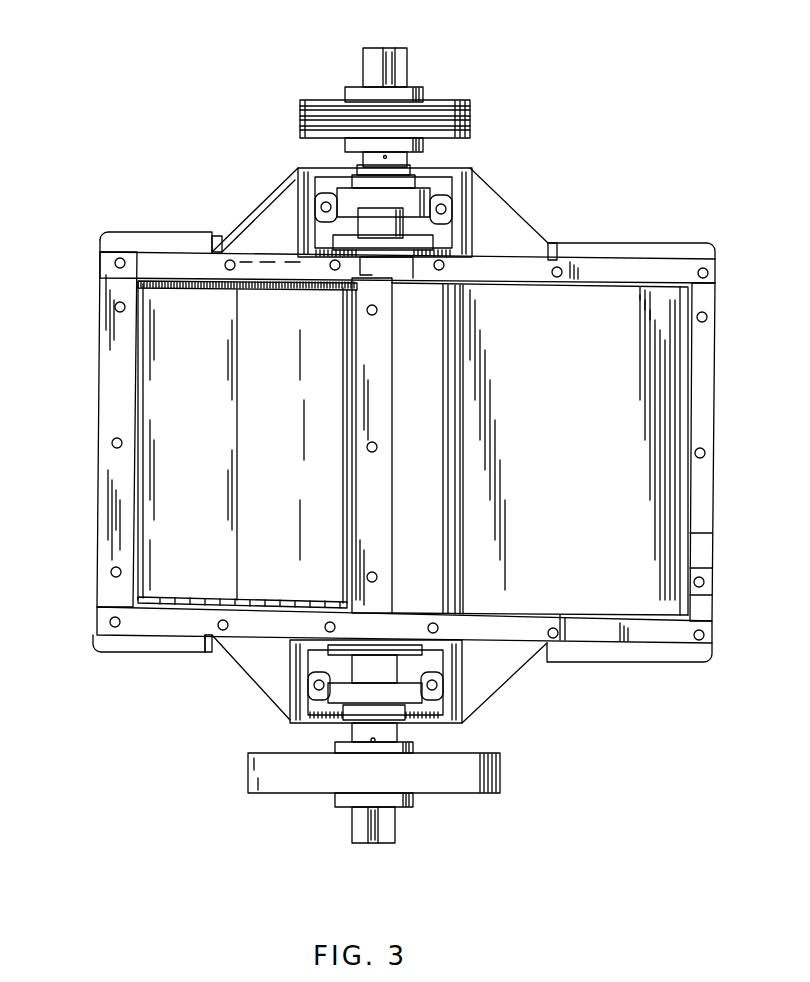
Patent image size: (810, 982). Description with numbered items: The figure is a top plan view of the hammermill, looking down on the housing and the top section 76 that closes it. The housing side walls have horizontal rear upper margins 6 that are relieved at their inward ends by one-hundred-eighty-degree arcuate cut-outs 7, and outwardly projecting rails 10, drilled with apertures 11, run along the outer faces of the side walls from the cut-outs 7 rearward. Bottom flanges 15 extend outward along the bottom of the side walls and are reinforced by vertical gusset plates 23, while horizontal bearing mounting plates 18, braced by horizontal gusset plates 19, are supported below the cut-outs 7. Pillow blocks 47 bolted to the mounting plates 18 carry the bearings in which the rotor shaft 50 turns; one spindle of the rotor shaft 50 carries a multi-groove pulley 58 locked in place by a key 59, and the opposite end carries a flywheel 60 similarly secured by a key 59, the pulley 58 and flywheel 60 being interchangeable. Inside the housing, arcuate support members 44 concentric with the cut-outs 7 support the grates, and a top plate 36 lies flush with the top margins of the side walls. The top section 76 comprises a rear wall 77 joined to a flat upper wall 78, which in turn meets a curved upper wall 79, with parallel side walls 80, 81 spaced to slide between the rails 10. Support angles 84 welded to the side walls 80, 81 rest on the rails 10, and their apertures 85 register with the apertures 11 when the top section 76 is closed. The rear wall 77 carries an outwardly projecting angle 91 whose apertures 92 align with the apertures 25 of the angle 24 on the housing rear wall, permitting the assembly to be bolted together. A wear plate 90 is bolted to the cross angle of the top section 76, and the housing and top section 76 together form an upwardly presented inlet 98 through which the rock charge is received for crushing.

The rear upper margins 6 is at (383, 42).
The arcuate cut-outs 7 is at (48, 440).
The rails 10 is at (716, 278).
The apertures 11 is at (120, 630).
The bottom flanges 15 is at (630, 243).
The bearing mounting plates 18 is at (323, 167).
The gusset plates 19 is at (247, 217).
The vertical gusset plates 23 is at (207, 651).
The angle 24 is at (708, 574).
The apertures 25 is at (704, 582).
The top plate 36 is at (100, 463).
The arcuate support members 44 is at (222, 290).
The pillow blocks 47 is at (440, 179).
The rotor shaft 50 is at (408, 76).
The multi-groove pulley 58 is at (471, 105).
The key 59 is at (386, 79).
The flywheel 60 is at (501, 772).
The top section 76 is at (700, 602).
The rear wall 77 is at (692, 535).
The flat upper wall 78 is at (677, 488).
The curved upper wall 79 is at (432, 541).
The top section side wall 80 is at (668, 282).
The top section side wall 81 is at (650, 622).
The support angles 84 is at (575, 267).
The apertures 85 is at (560, 640).
The wear plate 90 is at (352, 518).
The angle 91 is at (708, 394).
The apertures 92 is at (705, 454).
The inlet 98 is at (143, 372).